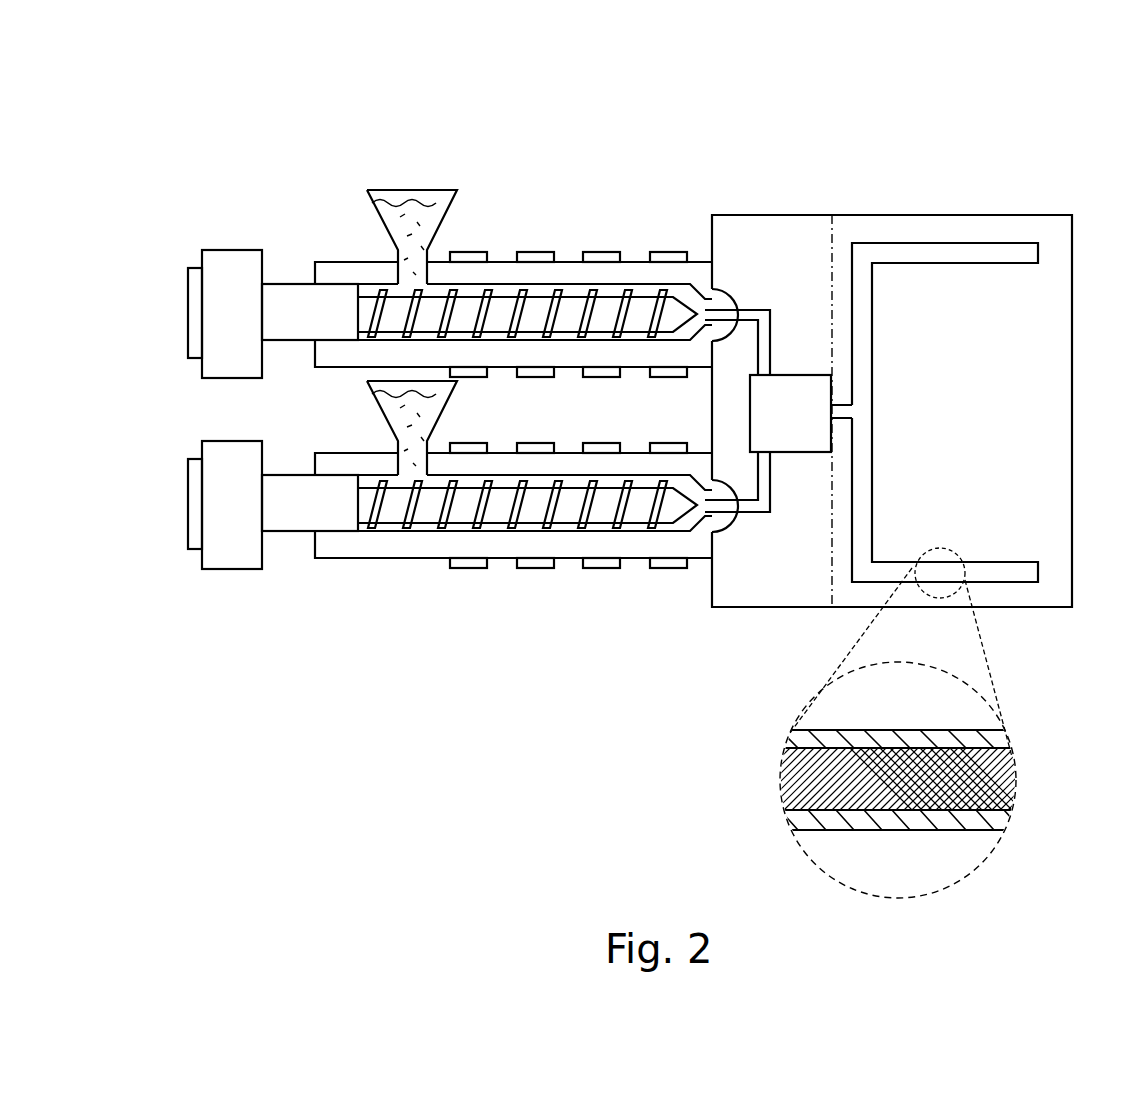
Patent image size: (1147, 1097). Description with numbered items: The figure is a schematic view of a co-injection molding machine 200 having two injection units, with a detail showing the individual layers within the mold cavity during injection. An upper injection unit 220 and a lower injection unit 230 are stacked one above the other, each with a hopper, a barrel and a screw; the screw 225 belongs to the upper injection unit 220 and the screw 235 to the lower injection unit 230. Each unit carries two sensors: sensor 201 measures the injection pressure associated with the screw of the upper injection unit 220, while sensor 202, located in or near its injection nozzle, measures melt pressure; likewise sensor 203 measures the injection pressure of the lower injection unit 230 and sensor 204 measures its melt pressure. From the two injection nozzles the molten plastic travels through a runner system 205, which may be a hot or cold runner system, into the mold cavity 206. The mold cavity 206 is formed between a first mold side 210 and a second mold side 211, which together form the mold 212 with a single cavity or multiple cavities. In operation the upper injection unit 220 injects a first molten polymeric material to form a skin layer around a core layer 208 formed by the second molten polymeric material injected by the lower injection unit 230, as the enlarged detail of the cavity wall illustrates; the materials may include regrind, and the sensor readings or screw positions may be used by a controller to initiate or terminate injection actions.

The injection molding machine 200 is at (621, 476).
The sensor 201 is at (328, 258).
The sensor 202 is at (705, 297).
The sensor 203 is at (327, 563).
The sensor 204 is at (704, 523).
The runner system 205 is at (800, 372).
The mold cavity 206 is at (909, 570).
The core layer 208 is at (1013, 768).
The first mold side 210 is at (742, 212).
The second mold side 211 is at (873, 212).
The mold 212 is at (831, 211).
The upper injection unit 220 is at (184, 318).
The screw 225 is at (374, 287).
The lower injection unit 230 is at (184, 519).
The screw 235 is at (390, 534).